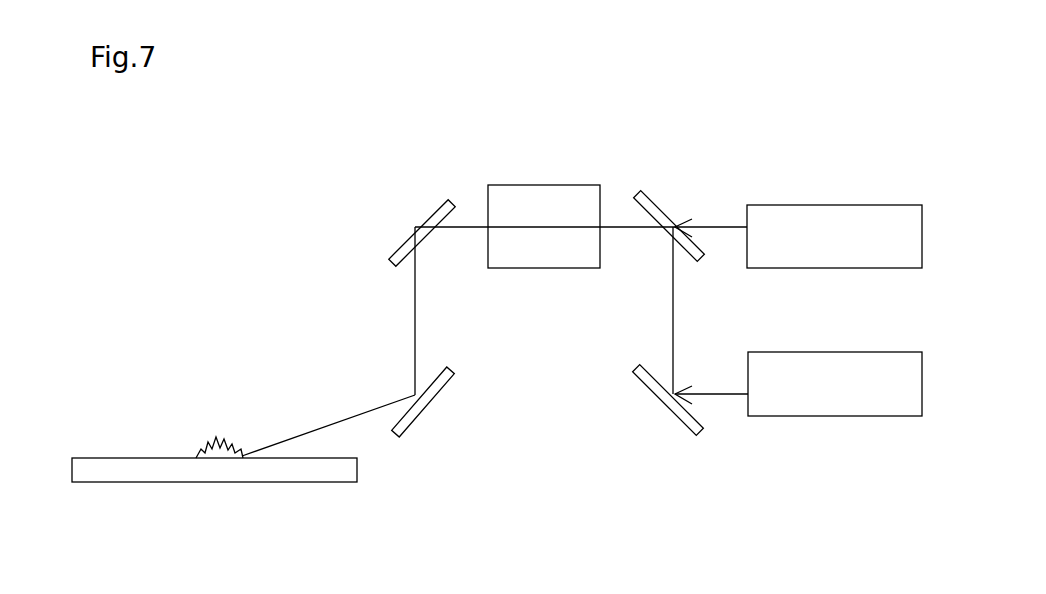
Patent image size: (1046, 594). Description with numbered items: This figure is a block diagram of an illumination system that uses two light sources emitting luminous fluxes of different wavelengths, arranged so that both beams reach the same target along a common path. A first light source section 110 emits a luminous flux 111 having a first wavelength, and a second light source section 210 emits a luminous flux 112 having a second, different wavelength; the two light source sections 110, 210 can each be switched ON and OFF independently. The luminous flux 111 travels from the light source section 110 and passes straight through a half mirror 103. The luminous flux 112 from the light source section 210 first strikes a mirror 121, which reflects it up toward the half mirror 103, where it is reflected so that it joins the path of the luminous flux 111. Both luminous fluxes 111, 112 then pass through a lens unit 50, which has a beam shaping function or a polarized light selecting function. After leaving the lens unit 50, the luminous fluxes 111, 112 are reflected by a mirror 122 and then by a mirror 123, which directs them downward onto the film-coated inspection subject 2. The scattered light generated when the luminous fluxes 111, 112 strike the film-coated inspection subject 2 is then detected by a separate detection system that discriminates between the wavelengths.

The film-coated inspection subject 2 is at (297, 478).
The lens unit 50 is at (532, 188).
The half mirror 103 is at (652, 203).
The light source section 110 is at (815, 208).
The luminous flux 111 is at (328, 402).
The luminous flux 112 is at (323, 422).
The mirror 121 is at (683, 427).
The mirror 122 is at (437, 212).
The mirror 123 is at (405, 424).
The light source section 210 is at (820, 358).